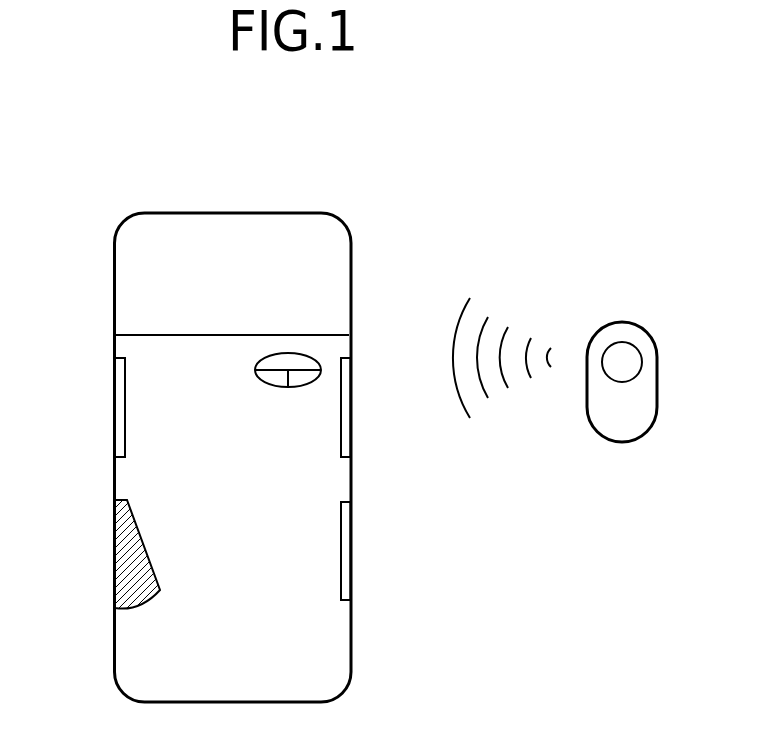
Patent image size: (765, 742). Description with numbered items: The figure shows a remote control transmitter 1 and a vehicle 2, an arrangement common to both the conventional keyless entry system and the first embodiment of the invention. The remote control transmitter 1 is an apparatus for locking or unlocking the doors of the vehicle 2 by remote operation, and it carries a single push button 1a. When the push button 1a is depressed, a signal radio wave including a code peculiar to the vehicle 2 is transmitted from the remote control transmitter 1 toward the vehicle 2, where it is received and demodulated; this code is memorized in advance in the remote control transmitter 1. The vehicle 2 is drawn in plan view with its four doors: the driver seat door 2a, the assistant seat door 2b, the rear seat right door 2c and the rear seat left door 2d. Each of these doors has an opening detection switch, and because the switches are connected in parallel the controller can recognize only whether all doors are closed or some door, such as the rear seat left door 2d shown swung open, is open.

The remote control transmitter 1 is at (617, 322).
The push button 1a is at (632, 362).
The vehicle 2 is at (287, 213).
The driver seat door 2a is at (345, 417).
The assistant seat door 2b is at (122, 418).
The rear seat right door 2c is at (345, 560).
The rear seat left door 2d is at (122, 553).